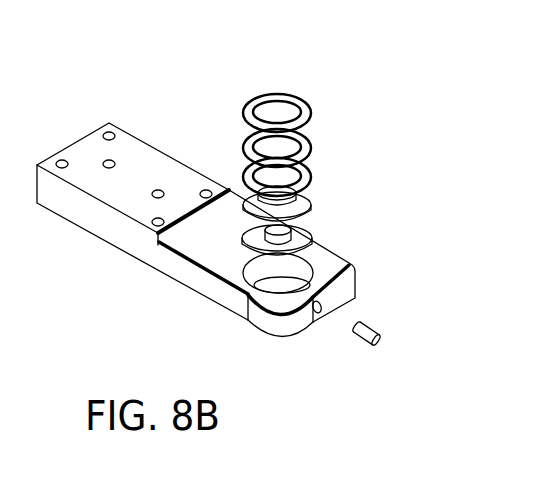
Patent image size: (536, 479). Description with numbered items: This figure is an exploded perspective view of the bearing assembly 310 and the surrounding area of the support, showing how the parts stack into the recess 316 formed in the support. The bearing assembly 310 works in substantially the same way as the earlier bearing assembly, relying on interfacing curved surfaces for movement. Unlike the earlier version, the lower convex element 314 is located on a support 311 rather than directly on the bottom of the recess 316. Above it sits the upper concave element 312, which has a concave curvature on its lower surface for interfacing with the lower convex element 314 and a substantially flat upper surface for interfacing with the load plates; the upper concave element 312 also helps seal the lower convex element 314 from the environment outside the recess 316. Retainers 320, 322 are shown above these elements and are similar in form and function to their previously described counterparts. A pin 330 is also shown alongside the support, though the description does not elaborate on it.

The bearing assembly 310 is at (318, 90).
The support 311 is at (308, 234).
The upper concave element 312 is at (309, 171).
The lower convex element 314 is at (308, 197).
The recess 316 is at (253, 266).
The retainer 320 is at (312, 139).
The retainer 322 is at (246, 106).
The pin 330 is at (345, 340).